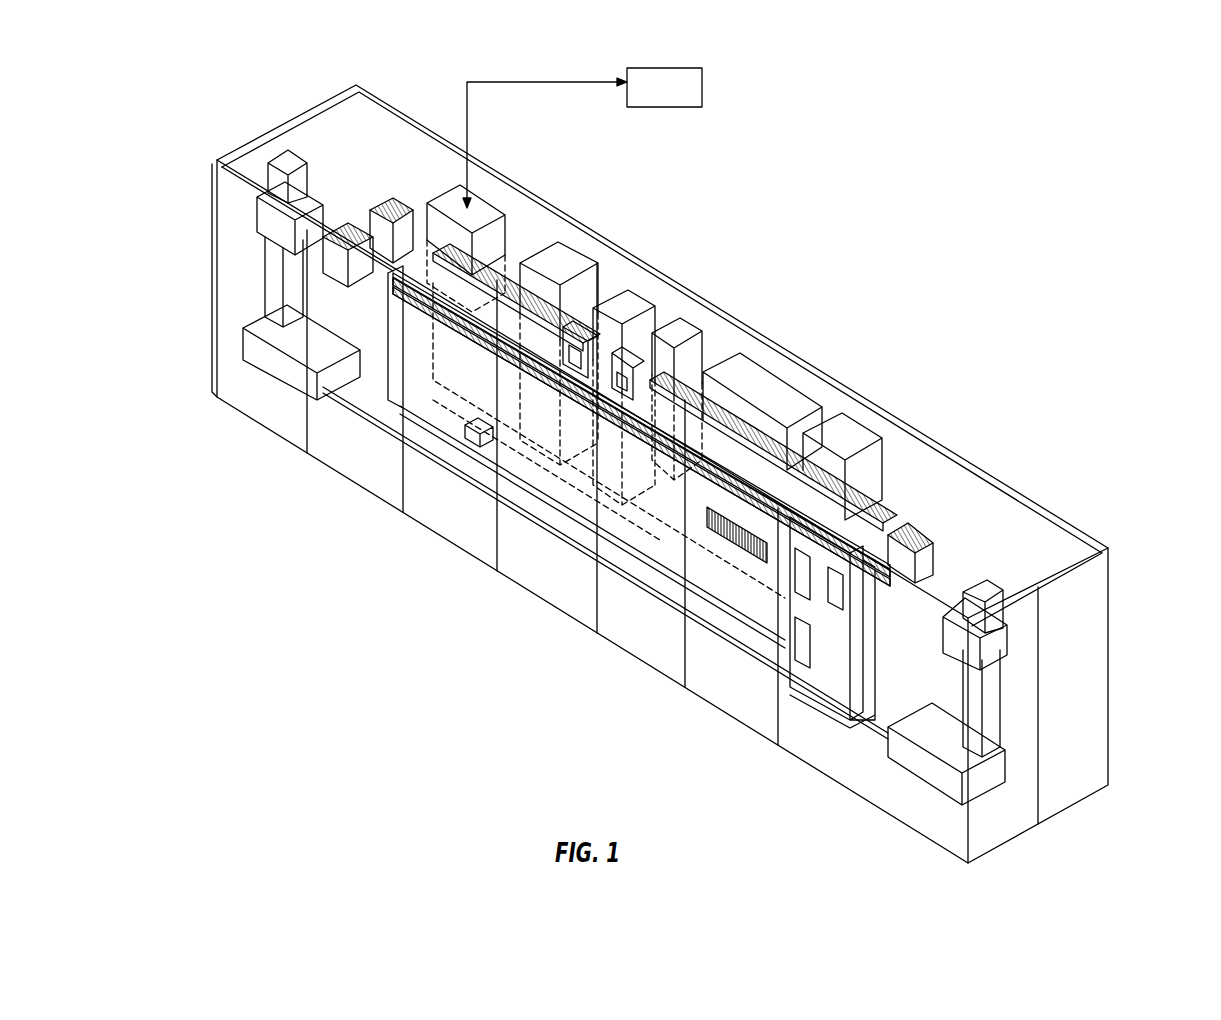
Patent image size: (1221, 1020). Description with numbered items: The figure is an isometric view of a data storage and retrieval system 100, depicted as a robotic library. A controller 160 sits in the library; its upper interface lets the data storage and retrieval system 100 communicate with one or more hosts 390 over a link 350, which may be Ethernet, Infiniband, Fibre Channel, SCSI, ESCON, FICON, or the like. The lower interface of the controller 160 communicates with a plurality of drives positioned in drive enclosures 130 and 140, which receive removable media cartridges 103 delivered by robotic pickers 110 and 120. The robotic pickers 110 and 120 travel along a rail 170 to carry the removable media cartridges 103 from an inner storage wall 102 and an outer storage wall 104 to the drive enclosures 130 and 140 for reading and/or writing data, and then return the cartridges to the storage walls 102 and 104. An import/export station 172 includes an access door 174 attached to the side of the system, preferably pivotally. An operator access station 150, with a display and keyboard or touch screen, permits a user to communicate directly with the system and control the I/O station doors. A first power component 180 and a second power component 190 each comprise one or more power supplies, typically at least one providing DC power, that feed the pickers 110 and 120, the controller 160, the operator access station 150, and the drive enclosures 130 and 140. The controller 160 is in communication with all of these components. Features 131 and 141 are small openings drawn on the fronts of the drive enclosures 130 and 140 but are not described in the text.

The data storage and retrieval system 100 is at (890, 132).
The inner storage wall 102 is at (493, 283).
The removable media cartridges 103 is at (467, 438).
The outer storage wall 104 is at (447, 422).
The robotic picker 110 is at (272, 223).
The robotic picker 120 is at (992, 650).
The drive enclosure 130 is at (628, 308).
The opening of second module 131 is at (575, 345).
The drive enclosure 140 is at (673, 332).
The opening of third module 141 is at (647, 383).
The operator access station 150 is at (562, 262).
The controller 160 is at (480, 212).
The rail 170 is at (550, 527).
The import/export station 172 is at (840, 672).
The access door 174 is at (807, 650).
The first power component 180 is at (913, 533).
The second power component 190 is at (887, 597).
The link 350 is at (493, 82).
The hosts 390 is at (667, 67).